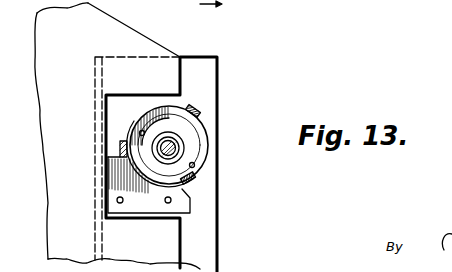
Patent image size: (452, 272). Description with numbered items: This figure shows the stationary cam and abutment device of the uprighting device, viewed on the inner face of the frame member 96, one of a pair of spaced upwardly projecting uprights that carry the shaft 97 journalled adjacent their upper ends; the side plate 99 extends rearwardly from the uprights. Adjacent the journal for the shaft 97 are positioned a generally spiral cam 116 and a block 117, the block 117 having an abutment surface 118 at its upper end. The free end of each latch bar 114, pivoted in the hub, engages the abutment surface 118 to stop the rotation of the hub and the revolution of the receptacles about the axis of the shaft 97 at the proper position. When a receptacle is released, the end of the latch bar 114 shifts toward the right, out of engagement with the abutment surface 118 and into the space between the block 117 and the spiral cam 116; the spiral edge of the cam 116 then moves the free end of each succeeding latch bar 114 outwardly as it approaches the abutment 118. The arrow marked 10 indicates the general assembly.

The panel section indicator 10 is at (222, 7).
The side plate 99 is at (132, 43).
The frame member 96 is at (208, 88).
The shaft 97 is at (175, 148).
The latch bar 114 is at (197, 111).
The spiral cam 116 is at (194, 130).
The block 117 is at (147, 206).
The abutment surface 118 is at (122, 162).